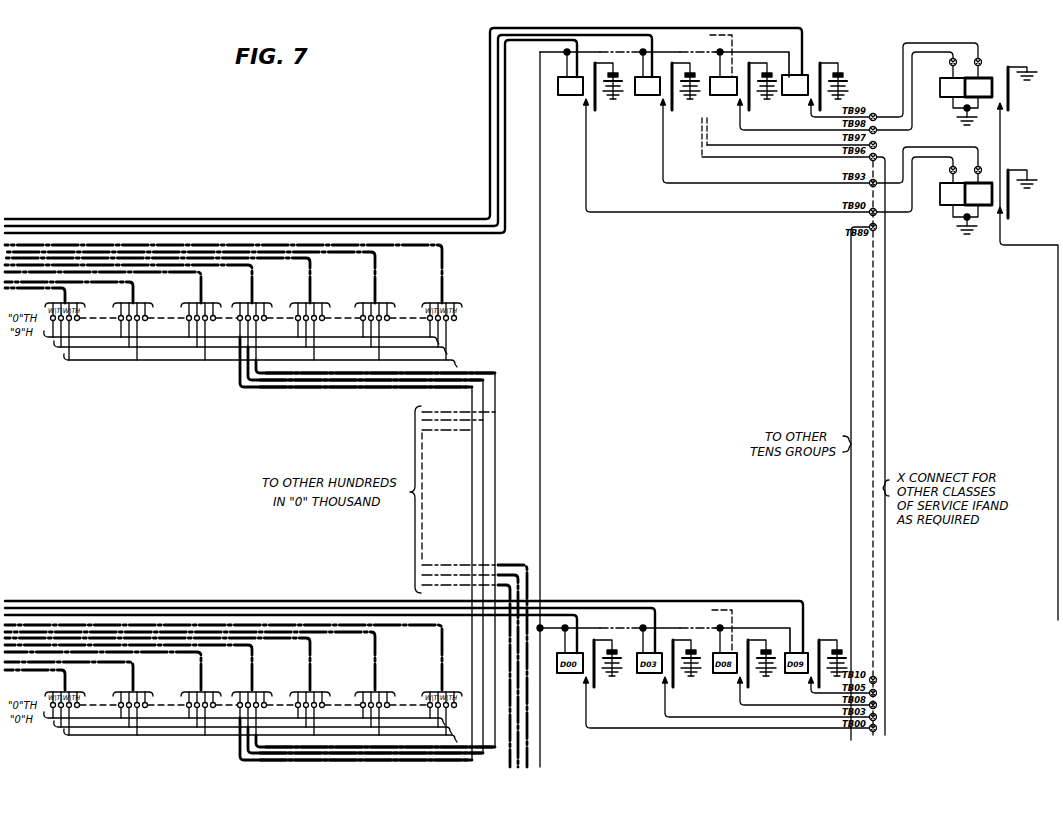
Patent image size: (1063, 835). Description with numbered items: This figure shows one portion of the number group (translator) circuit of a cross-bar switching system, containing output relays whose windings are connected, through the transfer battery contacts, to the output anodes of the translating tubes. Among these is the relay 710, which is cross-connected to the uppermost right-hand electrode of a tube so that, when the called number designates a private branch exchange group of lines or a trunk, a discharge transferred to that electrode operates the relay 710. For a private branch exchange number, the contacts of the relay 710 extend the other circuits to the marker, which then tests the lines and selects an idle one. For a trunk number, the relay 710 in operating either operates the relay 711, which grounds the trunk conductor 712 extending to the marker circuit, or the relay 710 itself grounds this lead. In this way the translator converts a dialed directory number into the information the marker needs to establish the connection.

The relay 710 is at (646, 96).
The relay 711 is at (955, 207).
The trunk conductor 712 is at (1058, 290).